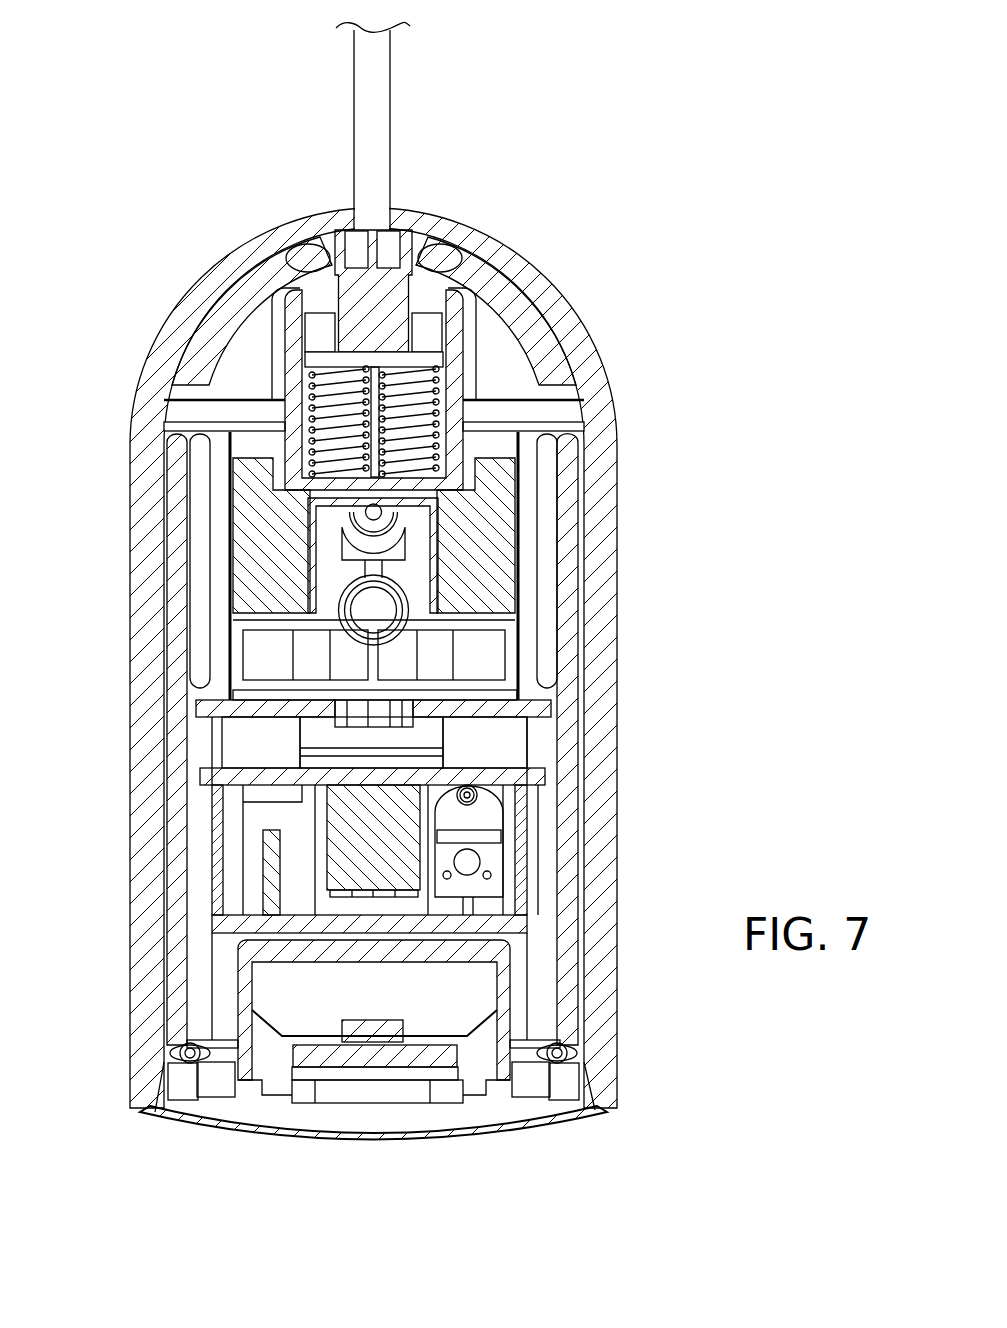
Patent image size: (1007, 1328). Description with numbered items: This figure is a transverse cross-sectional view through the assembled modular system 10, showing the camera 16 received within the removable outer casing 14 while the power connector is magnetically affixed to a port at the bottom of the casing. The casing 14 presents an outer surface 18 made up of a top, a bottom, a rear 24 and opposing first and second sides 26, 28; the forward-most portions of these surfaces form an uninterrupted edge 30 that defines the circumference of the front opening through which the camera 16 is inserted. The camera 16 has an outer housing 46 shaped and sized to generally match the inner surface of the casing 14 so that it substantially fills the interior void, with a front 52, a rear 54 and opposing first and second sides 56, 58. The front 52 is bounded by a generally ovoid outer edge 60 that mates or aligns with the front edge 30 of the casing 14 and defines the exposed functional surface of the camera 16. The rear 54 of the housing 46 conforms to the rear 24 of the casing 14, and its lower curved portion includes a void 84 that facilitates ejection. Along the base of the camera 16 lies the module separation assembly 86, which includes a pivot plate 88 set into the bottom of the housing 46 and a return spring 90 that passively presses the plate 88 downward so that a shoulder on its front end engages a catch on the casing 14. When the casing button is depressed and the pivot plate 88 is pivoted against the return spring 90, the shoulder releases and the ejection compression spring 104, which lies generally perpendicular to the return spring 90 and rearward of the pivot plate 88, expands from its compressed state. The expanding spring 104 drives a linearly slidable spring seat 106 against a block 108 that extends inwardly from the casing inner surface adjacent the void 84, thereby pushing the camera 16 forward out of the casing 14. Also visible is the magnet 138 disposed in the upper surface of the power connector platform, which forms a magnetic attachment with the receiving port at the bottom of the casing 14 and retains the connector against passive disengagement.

The modular system 10 is at (697, 133).
The casing 14 is at (620, 1042).
The camera 16 is at (224, 1133).
The outer surface 18 is at (607, 470).
The rear 24 is at (318, 207).
The first side 26 is at (617, 712).
The second side 28 is at (128, 688).
The edge 30 is at (598, 1112).
The outer housing 46 is at (565, 648).
The front 52 is at (345, 1132).
The rear 54 is at (275, 270).
The first side 56 is at (582, 765).
The second side 58 is at (166, 773).
The outer edge 60 is at (580, 1110).
The void 84 is at (332, 245).
The module separation assembly 86 is at (256, 500).
The pivot plate 88 is at (410, 590).
The return spring 90 is at (350, 610).
The ejection compression spring 104 is at (312, 397).
The spring seat 106 is at (400, 307).
The block 108 is at (395, 268).
The magnet 138 is at (373, 118).